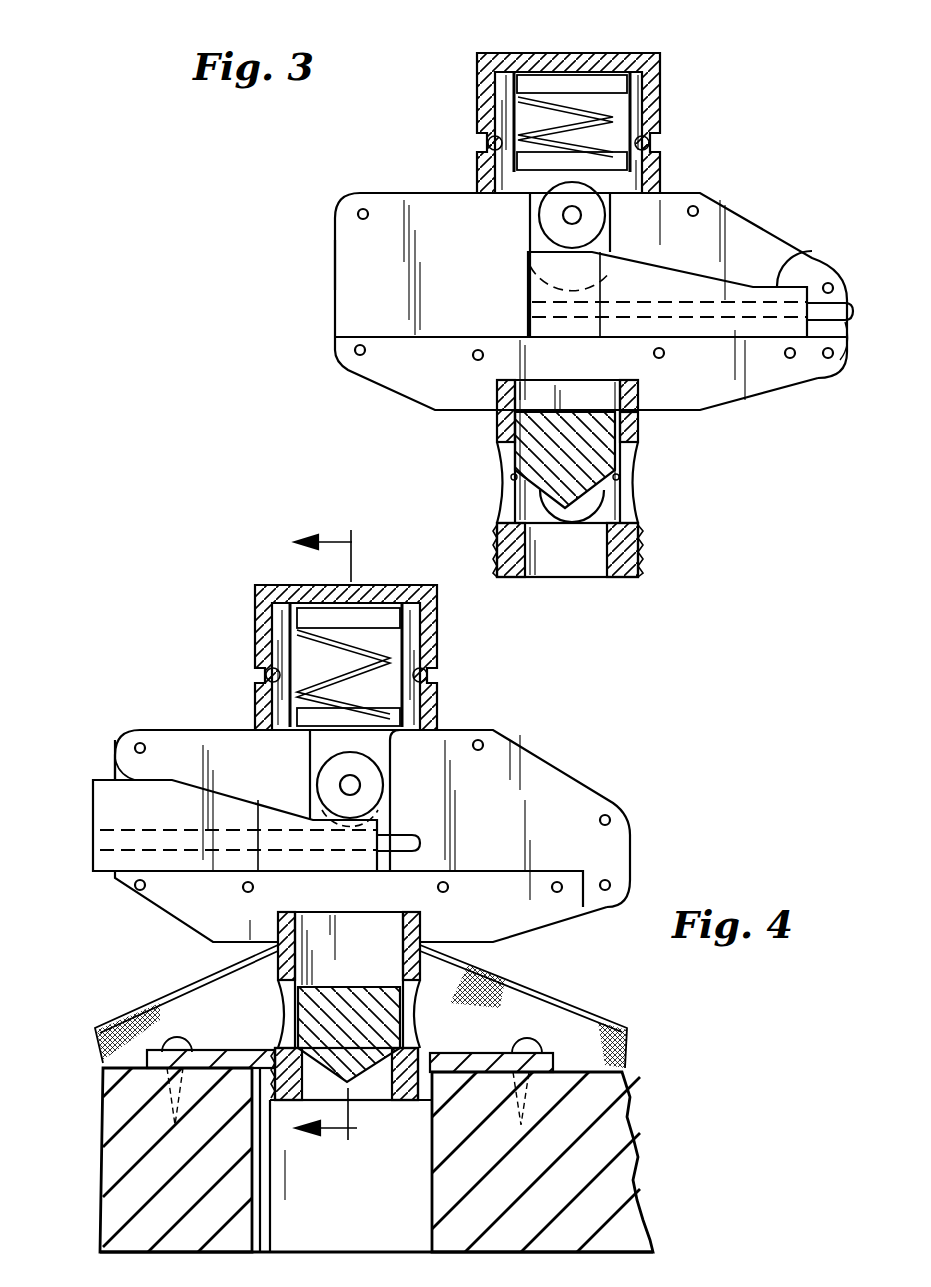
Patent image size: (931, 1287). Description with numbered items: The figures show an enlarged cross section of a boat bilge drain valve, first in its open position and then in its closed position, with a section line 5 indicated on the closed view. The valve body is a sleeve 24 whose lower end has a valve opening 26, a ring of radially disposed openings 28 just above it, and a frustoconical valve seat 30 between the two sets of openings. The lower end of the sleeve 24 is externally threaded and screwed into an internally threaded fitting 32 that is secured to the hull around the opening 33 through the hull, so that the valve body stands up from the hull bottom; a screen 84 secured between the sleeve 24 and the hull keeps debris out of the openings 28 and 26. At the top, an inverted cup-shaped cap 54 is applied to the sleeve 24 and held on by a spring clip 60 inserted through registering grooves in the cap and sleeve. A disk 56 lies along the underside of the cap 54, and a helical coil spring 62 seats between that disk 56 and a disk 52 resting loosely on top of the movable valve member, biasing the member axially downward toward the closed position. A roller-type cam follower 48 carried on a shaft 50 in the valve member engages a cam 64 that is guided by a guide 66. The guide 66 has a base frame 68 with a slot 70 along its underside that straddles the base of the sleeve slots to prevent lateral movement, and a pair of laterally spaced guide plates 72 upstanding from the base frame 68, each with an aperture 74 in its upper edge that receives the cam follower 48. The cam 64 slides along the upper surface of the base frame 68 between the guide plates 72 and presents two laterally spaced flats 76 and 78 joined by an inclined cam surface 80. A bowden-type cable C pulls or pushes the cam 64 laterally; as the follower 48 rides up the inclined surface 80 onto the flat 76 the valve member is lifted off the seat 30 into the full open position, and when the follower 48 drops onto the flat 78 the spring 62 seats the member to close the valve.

In FIG. 4, the section line 5- 5 is at (314, 834).
In FIG. 3, the sleeve 24 is at (495, 434).
In FIG. 4, the sleeve 24 is at (455, 950).
In FIG. 3, the valve opening 26 is at (592, 567).
In FIG. 4, the valve opening 26 is at (370, 1092).
In FIG. 3, the radially disposed openings 28 is at (508, 500).
In FIG. 4, the radially disposed openings 28 is at (280, 1020).
In FIG. 3, the valve seat 30 is at (607, 515).
In FIG. 4, the fitting 32 is at (237, 1050).
In FIG. 4, the opening through the hull 33 is at (430, 1198).
In FIG. 3, the cam follower 48 is at (598, 199).
In FIG. 4, the cam follower 48 is at (372, 780).
In FIG. 3, the shaft 50 is at (572, 215).
In FIG. 3, the disk 52 is at (492, 130).
In FIG. 4, the cap 54 is at (262, 612).
In FIG. 3, the disk 56 is at (543, 80).
In FIG. 4, the disk 56 is at (348, 667).
In FIG. 3, the spring clip 60 is at (648, 144).
In FIG. 4, the spring clip 60 is at (268, 676).
In FIG. 3, the helical coil spring 62 is at (518, 110).
In FIG. 4, the helical coil spring 62 is at (270, 592).
In FIG. 3, the cam 64 is at (715, 297).
In FIG. 4, the cam 64 is at (108, 804).
In FIG. 3, the guide 66 is at (334, 262).
In FIG. 4, the guide 66 is at (112, 768).
In FIG. 3, the base frame 68 is at (372, 375).
In FIG. 4, the base frame 68 is at (155, 908).
In FIG. 3, the slot 70 is at (645, 418).
In FIG. 3, the guide plates 72 is at (337, 218).
In FIG. 4, the guide plates 72 is at (162, 728).
In FIG. 3, the aperture 74 is at (612, 240).
In FIG. 3, the flat 76 is at (532, 243).
In FIG. 4, the flat 76 is at (128, 772).
In FIG. 3, the flat 78 is at (812, 268).
In FIG. 4, the flat 78 is at (385, 800).
In FIG. 3, the inclined cam surface 80 is at (670, 272).
In FIG. 4, the inclined cam surface 80 is at (253, 820).
In FIG. 4, the screen 84 is at (555, 998).
In FIG. 3, the cable C is at (842, 375).
In FIG. 4, the cable C is at (420, 848).